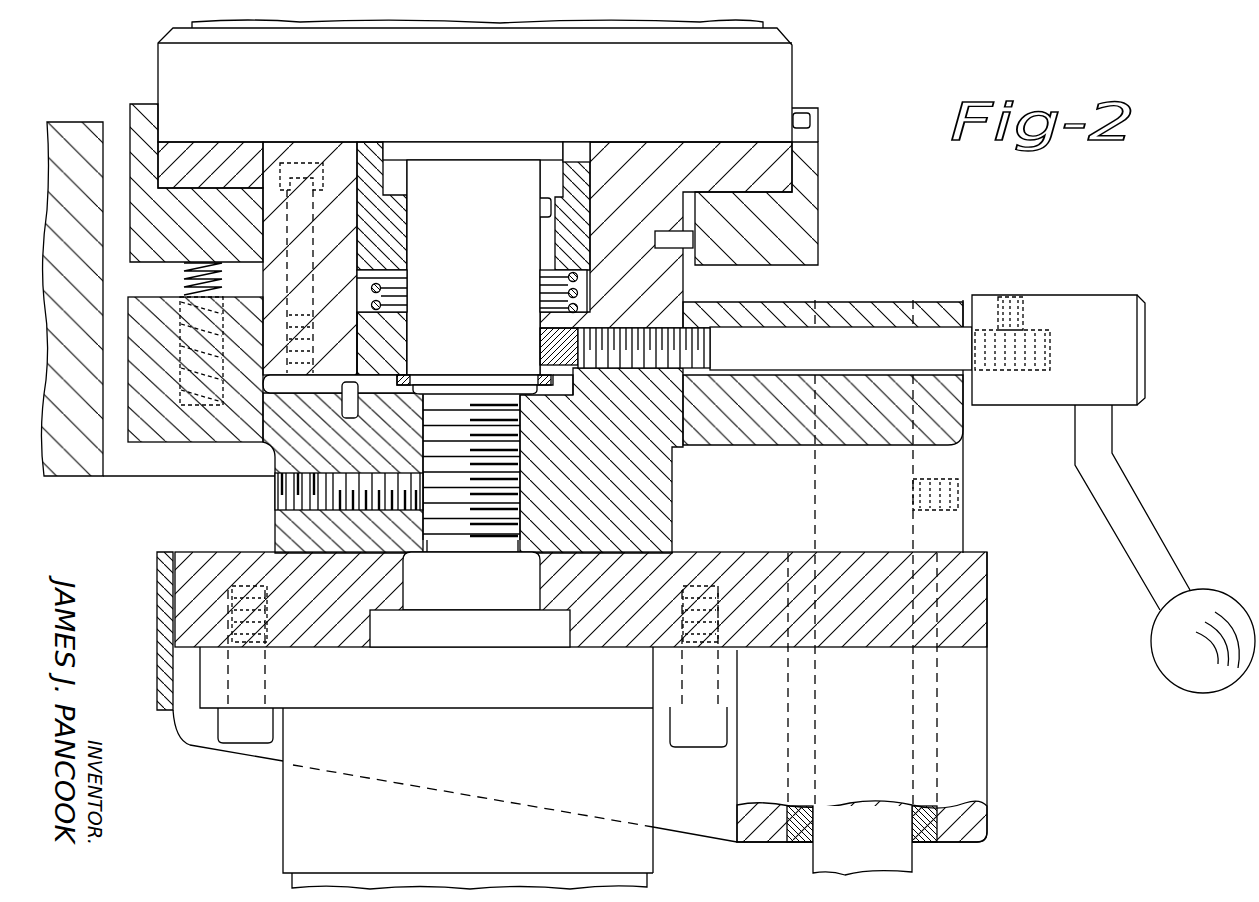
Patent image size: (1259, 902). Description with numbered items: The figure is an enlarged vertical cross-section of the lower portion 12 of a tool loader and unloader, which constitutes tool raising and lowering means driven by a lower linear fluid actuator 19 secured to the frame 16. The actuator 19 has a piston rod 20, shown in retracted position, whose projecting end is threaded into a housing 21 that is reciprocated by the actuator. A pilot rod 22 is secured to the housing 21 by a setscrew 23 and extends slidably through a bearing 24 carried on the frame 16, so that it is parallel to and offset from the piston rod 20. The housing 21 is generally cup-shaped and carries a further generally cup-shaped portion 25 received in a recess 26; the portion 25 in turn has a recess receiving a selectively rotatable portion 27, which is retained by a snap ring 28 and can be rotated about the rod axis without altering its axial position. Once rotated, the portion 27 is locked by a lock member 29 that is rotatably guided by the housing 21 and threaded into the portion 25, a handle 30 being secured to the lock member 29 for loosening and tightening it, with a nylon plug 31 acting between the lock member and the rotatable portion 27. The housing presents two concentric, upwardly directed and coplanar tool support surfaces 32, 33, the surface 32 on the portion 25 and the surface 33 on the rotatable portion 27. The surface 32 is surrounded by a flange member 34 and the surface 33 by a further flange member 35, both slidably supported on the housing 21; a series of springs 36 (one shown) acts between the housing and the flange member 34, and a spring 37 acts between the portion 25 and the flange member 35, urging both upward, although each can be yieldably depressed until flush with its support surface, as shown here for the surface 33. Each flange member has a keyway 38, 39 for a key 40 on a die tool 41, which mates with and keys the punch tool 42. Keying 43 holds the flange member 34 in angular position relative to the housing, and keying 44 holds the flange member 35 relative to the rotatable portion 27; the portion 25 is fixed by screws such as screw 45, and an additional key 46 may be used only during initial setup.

The lower portion 12 is at (845, 274).
The frame 16 is at (188, 590).
The lower linear fluid actuator 19 is at (283, 803).
The piston rod 20 is at (502, 594).
The housing 21 is at (687, 471).
The pilot rod 22 is at (900, 858).
The setscrew 23 is at (965, 469).
The bearing 24 is at (930, 805).
The housing portion 25 is at (363, 342).
The recess 26 is at (542, 374).
The selectively rotatable portion 27 is at (466, 282).
The snap ring 28 is at (411, 377).
The lock member 29 is at (782, 358).
The handle 30 is at (1102, 438).
The nylon plug 31 is at (545, 338).
The tool support surface 32 is at (258, 142).
The tool support surface 33 is at (447, 142).
The flange member 34 is at (160, 240).
The flange member 35 is at (400, 233).
The springs 36 is at (216, 278).
The spring 37 is at (545, 292).
The keyway 38 is at (812, 137).
The keyway 39 is at (578, 152).
The key 40 is at (800, 113).
The die tool 41 is at (664, 86).
The punch tool 42 is at (745, 29).
The keying 43 is at (670, 248).
The keying 44 is at (522, 203).
The screw 45 is at (312, 158).
The additional key 46 is at (350, 402).